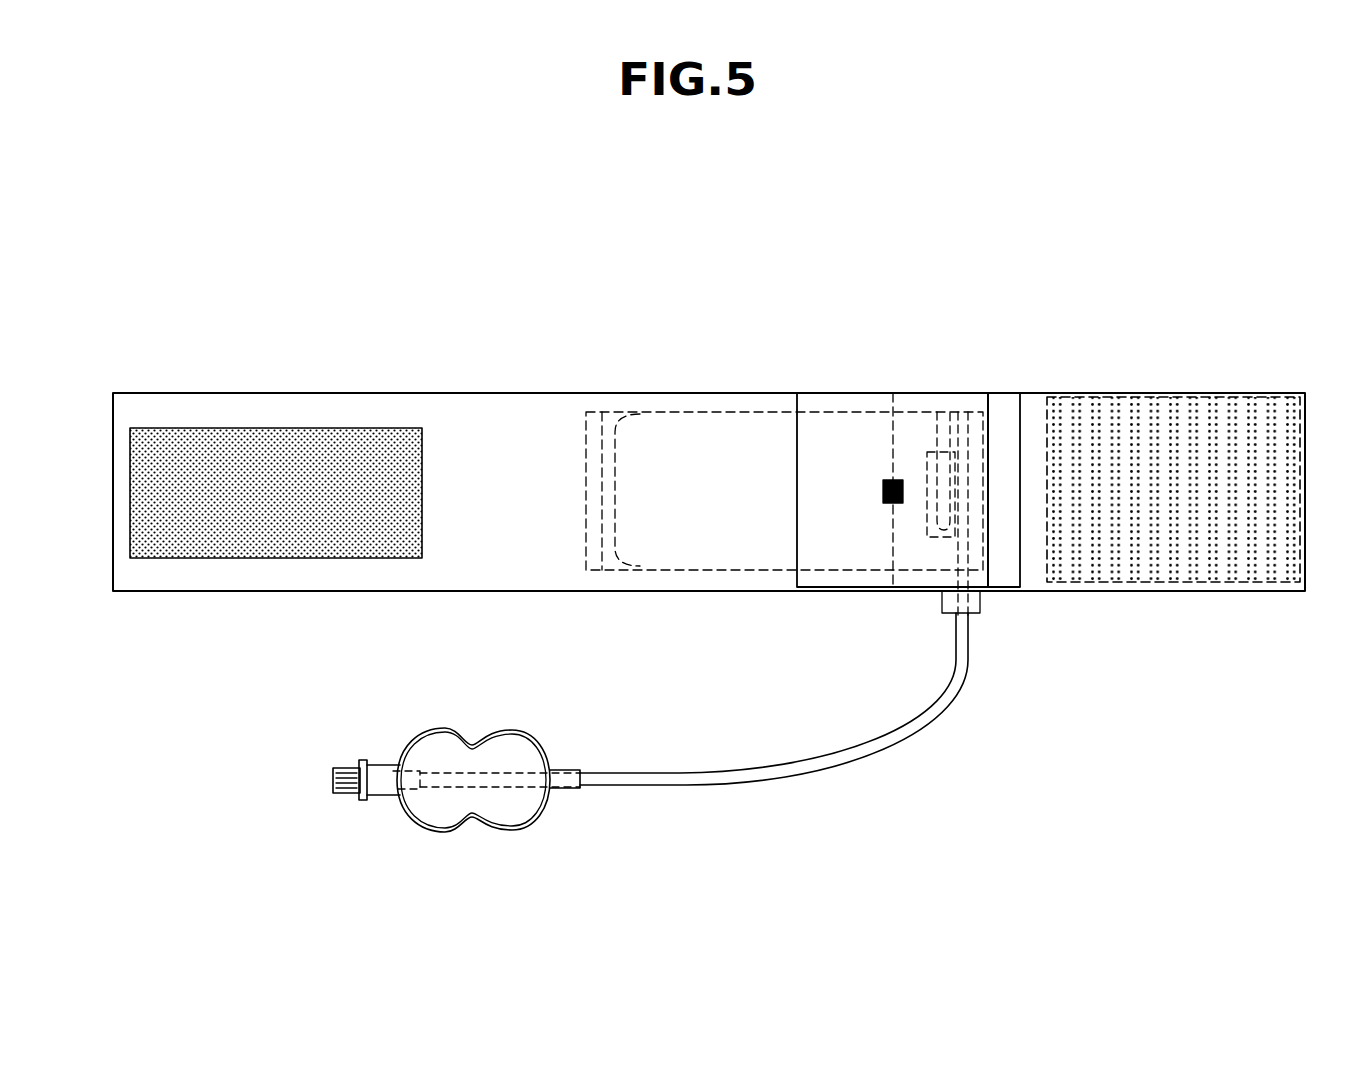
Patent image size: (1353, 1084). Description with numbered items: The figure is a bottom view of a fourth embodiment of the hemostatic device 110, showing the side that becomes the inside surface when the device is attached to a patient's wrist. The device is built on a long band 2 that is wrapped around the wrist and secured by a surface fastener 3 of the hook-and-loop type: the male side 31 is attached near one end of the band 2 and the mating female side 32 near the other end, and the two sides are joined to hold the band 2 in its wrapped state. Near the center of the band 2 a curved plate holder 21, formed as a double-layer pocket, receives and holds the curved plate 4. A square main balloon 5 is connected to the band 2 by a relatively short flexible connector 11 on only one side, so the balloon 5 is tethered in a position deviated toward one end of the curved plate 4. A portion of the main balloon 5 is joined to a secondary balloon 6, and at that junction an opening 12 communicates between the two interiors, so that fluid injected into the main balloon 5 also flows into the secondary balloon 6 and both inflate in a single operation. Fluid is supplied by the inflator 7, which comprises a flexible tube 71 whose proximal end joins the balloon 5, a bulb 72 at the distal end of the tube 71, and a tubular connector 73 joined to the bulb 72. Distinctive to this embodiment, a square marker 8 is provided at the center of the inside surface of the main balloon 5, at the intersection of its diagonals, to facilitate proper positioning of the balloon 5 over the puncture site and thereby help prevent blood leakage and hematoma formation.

The hemostatic device 110 is at (709, 398).
The band 2 is at (480, 425).
The surface fastener 3 is at (715, 438).
The male side of surface fastener 31 is at (245, 470).
The female side of surface fastener 32 is at (1160, 470).
The curved plate holder 21 is at (607, 412).
The curved plate 4 is at (658, 465).
The main balloon 5 is at (797, 468).
The secondary balloon 6 is at (888, 445).
The opening 12 is at (940, 455).
The connector 11 is at (1005, 430).
The marker 8 is at (893, 503).
The inflator 7 is at (648, 772).
The tube 71 is at (713, 787).
The bulb 72 is at (508, 810).
The tubular connector 73 is at (345, 795).